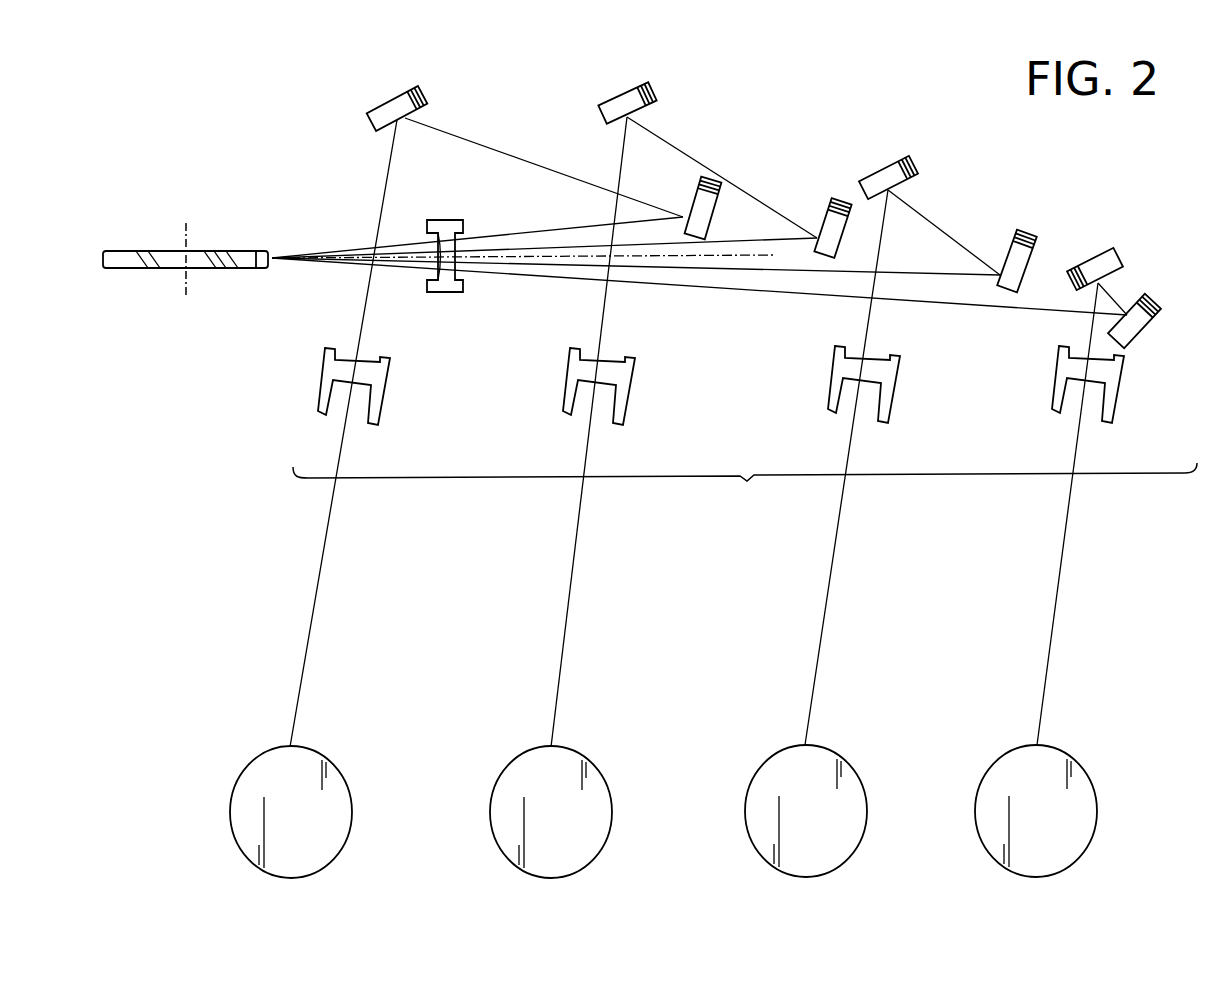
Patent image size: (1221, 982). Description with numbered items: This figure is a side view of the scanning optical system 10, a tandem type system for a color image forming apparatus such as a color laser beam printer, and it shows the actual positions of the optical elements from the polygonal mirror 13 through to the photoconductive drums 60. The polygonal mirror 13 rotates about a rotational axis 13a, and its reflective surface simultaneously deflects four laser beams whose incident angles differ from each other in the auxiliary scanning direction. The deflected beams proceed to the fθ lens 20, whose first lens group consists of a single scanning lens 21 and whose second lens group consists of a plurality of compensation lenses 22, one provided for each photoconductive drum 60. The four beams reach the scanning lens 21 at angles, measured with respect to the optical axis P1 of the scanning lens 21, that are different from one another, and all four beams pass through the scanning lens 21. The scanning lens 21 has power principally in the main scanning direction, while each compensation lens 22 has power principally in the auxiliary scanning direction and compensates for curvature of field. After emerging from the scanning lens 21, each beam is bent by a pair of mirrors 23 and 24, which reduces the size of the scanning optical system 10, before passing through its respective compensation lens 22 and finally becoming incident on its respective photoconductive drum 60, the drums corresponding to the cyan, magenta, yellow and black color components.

The scanning optical system 10 is at (150, 566).
The polygonal mirror 13 is at (122, 251).
The rotational axis 13a is at (190, 232).
The fθ lens 20 is at (745, 490).
The scanning lens 21 is at (449, 292).
The compensation lens 22 is at (396, 409).
The mirror 23 is at (690, 194).
The mirror 24 is at (428, 100).
The photoconductive drum 60 is at (260, 753).
The optical axis P1 is at (747, 256).